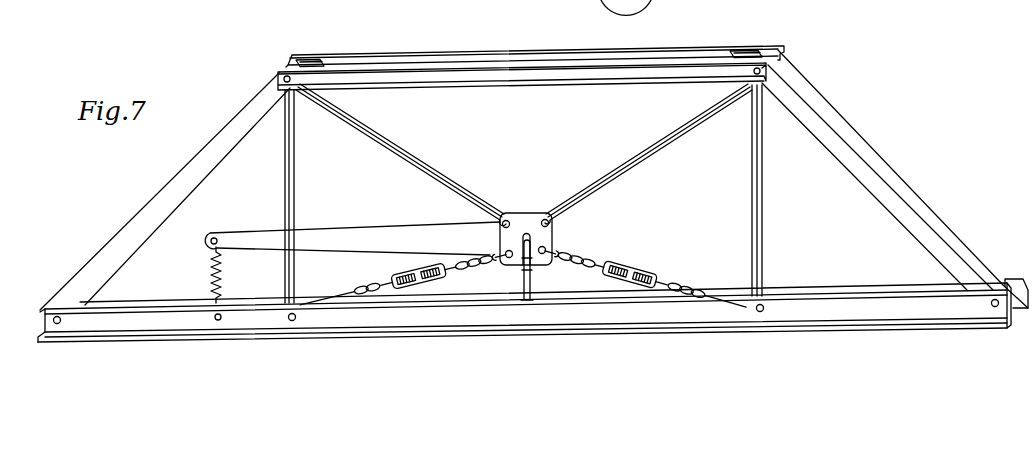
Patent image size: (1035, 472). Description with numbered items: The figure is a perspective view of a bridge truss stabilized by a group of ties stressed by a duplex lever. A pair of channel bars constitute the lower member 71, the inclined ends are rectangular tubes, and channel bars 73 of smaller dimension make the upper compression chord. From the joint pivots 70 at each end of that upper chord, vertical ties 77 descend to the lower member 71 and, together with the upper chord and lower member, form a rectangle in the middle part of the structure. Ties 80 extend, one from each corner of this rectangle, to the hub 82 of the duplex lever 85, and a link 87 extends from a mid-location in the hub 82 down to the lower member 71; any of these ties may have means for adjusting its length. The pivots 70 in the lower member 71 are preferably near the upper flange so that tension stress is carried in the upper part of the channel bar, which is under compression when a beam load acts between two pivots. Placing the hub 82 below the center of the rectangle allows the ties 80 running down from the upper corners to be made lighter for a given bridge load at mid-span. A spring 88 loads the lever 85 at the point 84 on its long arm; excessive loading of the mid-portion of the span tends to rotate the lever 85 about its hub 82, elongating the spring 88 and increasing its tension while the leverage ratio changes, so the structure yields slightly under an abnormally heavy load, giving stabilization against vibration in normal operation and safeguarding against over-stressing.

The joint pivots 70 is at (286, 76).
The lower member 71 is at (847, 283).
The channel bars 73 is at (567, 53).
The vertical ties 77 is at (284, 178).
The ties 80 is at (398, 158).
The hub 82 is at (531, 212).
The point 84 is at (212, 242).
The duplex lever 85 is at (352, 238).
The link 87 is at (533, 288).
The spring 88 is at (212, 272).